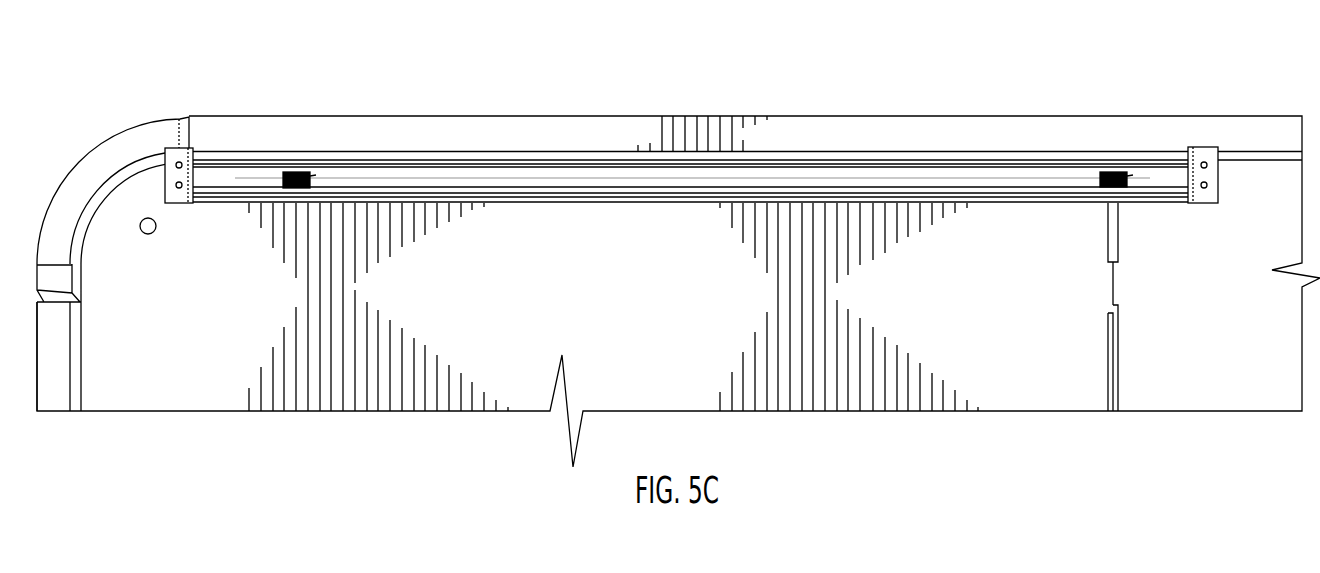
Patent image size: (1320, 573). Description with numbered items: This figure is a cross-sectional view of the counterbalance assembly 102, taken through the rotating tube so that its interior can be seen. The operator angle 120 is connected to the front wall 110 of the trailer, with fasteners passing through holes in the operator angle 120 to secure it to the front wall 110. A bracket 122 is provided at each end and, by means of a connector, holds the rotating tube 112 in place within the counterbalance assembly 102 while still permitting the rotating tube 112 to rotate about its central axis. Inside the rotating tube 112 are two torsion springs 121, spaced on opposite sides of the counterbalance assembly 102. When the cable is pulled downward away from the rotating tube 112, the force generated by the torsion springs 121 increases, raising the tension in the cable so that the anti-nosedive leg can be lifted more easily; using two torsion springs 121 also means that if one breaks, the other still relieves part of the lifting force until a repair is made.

The counterbalance assembly 102 is at (126, 193).
The front wall 110 is at (190, 371).
The rotating tube 112 is at (565, 167).
The operator angle 120 is at (813, 160).
The torsion spring 121 is at (299, 172).
The bracket 122 is at (168, 148).